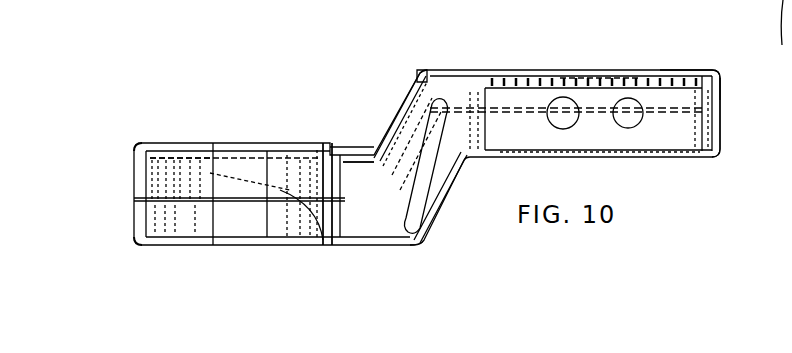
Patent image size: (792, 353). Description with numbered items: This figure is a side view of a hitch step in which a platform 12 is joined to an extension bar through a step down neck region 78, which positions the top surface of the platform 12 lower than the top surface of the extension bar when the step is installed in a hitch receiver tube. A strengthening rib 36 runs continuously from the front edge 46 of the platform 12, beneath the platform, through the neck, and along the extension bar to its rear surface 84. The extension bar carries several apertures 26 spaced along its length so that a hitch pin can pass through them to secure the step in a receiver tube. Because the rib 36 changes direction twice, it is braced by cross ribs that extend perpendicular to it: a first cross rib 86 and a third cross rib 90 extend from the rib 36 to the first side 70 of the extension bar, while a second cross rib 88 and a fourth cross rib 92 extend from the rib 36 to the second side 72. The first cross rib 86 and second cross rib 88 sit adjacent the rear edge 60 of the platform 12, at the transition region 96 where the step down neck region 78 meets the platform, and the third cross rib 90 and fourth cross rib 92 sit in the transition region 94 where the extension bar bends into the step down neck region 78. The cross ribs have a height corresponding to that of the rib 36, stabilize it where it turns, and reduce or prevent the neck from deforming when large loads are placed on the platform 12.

The platform 12 is at (252, 220).
The apertures 26 is at (638, 128).
The rib 36 is at (187, 138).
The front edge of platform 46 is at (137, 246).
The rear edge of platform 60 is at (342, 246).
The first side of extension bar 70 is at (673, 147).
The second side of extension bar 72 is at (687, 53).
The step down neck region 78 is at (442, 170).
The rear surface of extension bar 84 is at (722, 103).
The first cross rib 86 is at (430, 228).
The second cross rib 88 is at (375, 122).
The third cross rib 90 is at (447, 97).
The fourth cross rib 92 is at (422, 56).
The transition region of extension bar 94 is at (428, 72).
The transition region 96 is at (417, 250).